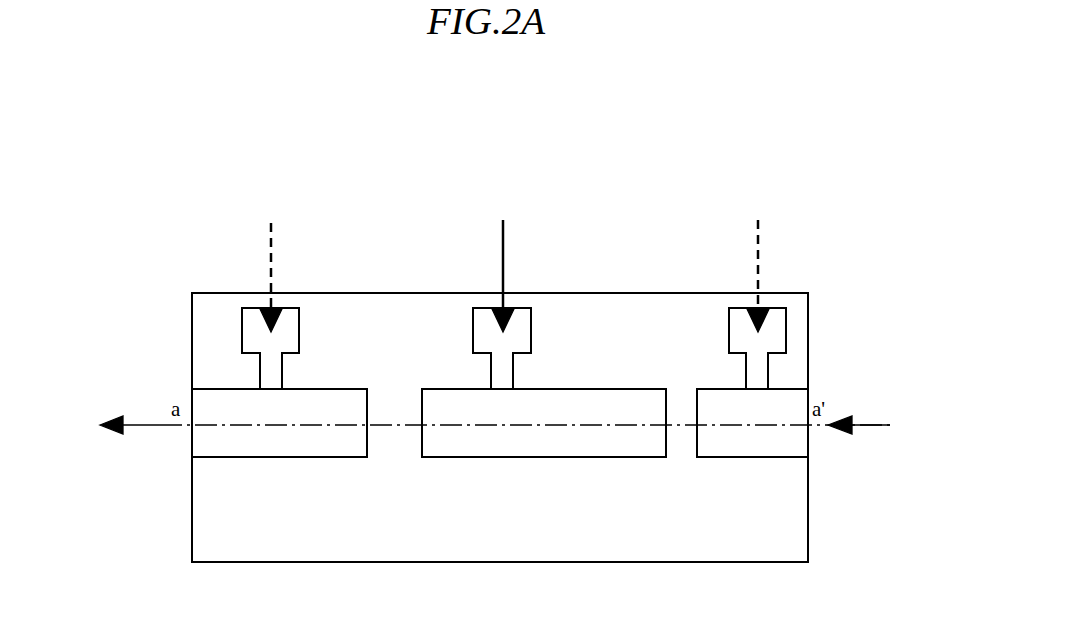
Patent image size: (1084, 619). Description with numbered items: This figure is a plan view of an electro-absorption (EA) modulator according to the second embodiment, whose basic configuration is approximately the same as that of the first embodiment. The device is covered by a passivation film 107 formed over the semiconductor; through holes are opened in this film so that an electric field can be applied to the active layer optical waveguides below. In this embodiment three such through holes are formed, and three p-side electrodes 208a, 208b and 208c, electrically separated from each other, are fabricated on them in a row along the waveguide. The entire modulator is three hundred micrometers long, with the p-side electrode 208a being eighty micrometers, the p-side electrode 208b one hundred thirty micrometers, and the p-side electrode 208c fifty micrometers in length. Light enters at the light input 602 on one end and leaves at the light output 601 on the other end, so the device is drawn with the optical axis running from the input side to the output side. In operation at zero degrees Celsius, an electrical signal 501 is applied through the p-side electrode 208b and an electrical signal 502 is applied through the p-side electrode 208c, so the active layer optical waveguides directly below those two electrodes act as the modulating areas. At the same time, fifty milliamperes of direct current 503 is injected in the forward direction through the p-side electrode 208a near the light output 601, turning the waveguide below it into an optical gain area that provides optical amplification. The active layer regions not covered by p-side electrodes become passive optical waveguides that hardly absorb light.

The passivation film 107 is at (797, 362).
The p-side electrode 208a is at (249, 314).
The p-side electrode 208b is at (480, 312).
The p-side electrode 208c is at (738, 312).
The electrical signal 501 is at (503, 249).
The electrical signal 502 is at (766, 249).
The direct current 503 is at (253, 249).
The light output 601 is at (128, 422).
The light input 602 is at (871, 428).